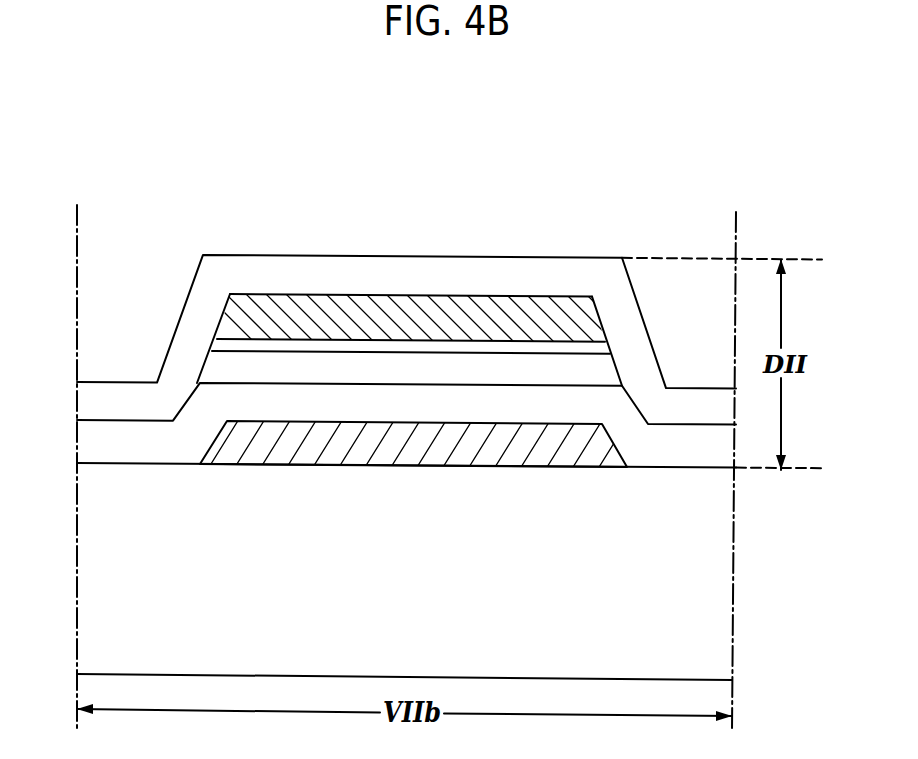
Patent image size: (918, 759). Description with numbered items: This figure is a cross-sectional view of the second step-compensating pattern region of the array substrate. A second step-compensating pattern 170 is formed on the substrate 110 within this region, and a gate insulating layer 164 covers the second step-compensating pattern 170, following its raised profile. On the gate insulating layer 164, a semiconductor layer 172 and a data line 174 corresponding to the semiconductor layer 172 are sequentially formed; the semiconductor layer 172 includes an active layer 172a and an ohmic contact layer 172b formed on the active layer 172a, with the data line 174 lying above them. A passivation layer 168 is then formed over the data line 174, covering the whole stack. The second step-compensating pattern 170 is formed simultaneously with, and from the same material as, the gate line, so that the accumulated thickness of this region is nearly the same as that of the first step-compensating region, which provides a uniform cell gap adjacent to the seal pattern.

The substrate 110 is at (391, 619).
The gate insulating layer 164 is at (670, 445).
The passivation layer 168 is at (493, 268).
The second step-compensating pattern 170 is at (472, 460).
The semiconductor layer 172 is at (409, 436).
The active layer 172a is at (257, 373).
The ohmic contact layer 172b is at (333, 345).
The data line 174 is at (377, 317).